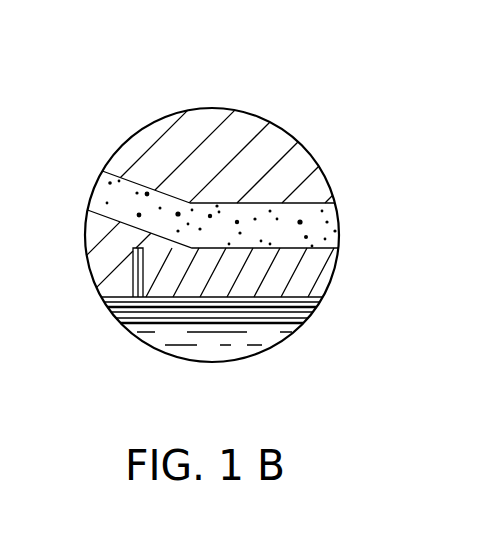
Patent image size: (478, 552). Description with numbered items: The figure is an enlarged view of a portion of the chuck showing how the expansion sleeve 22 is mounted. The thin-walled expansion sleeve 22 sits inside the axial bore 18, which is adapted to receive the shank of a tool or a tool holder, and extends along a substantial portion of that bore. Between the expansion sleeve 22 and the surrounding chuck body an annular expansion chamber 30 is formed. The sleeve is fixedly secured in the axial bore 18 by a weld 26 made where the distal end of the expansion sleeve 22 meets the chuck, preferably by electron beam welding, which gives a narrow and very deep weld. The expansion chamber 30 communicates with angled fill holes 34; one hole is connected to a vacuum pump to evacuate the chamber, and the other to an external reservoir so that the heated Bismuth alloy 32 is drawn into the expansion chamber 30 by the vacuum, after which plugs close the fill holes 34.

The axial bore 18 is at (170, 332).
The expansion sleeve 22 is at (302, 277).
The weld 26 is at (133, 268).
The expansion chamber 30 is at (267, 203).
The alloy 32 is at (320, 222).
The angled fill holes 34 is at (147, 183).